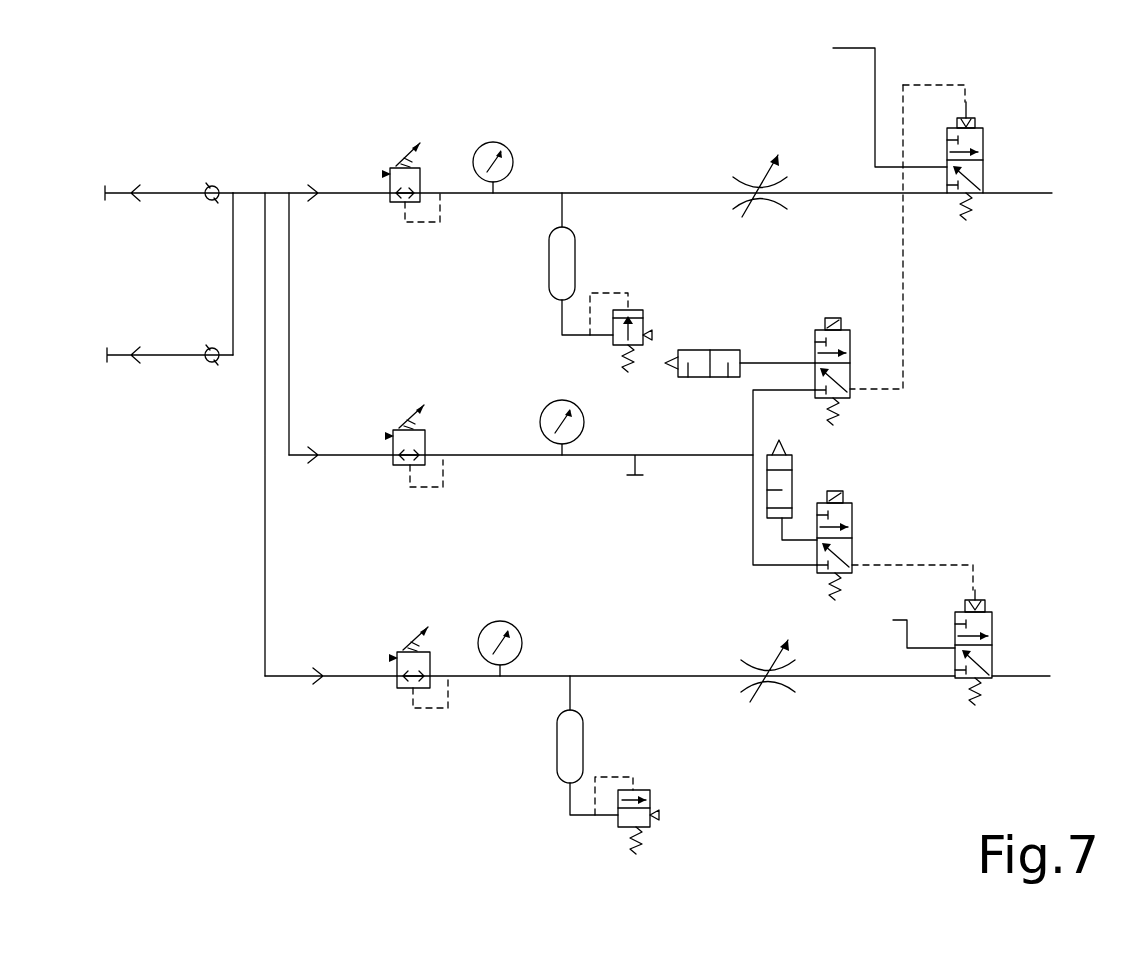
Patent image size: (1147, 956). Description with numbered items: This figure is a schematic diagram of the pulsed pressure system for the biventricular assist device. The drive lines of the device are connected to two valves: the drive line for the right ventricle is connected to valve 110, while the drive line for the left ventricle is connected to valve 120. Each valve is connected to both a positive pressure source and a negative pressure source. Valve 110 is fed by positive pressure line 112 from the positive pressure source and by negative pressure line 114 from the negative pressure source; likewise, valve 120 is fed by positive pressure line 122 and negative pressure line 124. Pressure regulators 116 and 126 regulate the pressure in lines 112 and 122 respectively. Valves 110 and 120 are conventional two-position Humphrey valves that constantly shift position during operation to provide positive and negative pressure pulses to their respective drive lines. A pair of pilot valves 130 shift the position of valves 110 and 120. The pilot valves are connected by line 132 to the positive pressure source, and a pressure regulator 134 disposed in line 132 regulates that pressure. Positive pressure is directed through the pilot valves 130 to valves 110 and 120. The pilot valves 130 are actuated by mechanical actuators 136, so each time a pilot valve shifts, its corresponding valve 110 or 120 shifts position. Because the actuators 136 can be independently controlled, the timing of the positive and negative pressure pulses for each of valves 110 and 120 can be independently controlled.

The valve 110 is at (983, 140).
The positive pressure line 112 is at (630, 193).
The negative pressure line 114 is at (877, 78).
The pressure regulator 116 is at (388, 172).
The valve 120 is at (992, 618).
The positive pressure line 122 is at (848, 676).
The negative pressure line 124 is at (930, 646).
The pressure regulator 126 is at (396, 655).
The pilot valves 130 is at (850, 342).
The line 132 is at (507, 455).
The pressure regulator 134 is at (392, 432).
The mechanical actuators 136 is at (700, 377).